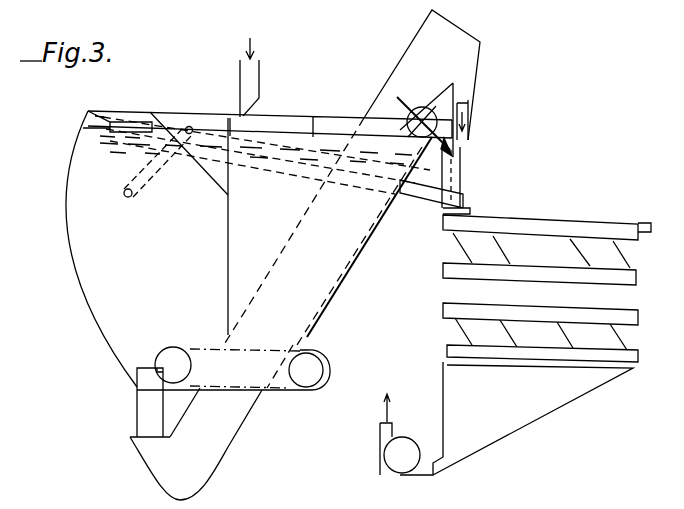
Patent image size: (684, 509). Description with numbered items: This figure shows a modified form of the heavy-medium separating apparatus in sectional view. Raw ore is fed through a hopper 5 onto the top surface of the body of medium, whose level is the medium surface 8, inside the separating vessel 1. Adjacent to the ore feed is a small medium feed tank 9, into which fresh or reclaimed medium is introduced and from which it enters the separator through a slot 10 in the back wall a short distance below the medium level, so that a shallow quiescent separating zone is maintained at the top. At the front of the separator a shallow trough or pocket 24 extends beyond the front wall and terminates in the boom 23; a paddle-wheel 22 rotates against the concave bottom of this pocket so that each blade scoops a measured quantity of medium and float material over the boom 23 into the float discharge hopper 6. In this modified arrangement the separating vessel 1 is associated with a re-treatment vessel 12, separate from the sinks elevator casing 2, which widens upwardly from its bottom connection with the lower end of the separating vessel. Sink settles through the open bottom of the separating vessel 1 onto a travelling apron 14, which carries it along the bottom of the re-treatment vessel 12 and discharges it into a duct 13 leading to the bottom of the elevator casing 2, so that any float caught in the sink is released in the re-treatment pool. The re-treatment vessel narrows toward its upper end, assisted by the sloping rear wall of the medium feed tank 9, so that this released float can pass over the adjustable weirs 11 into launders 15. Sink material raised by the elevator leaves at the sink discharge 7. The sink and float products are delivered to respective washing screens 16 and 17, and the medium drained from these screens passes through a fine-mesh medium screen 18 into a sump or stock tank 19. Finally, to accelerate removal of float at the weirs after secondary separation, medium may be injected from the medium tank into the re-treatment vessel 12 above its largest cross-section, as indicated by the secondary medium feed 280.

The separating vessel 1 is at (362, 252).
The sinks elevator casing 2 is at (405, 52).
The hopper 5 is at (260, 66).
The hopper 6 is at (460, 152).
The sink discharge 7 is at (470, 115).
The medium surface 8 is at (313, 118).
The medium feed tank 9 is at (205, 117).
The slot 10 is at (198, 160).
The weir 11 is at (88, 112).
The re-treatment vessel 12 is at (62, 192).
The duct 13 is at (136, 406).
The travelling apron 14 is at (210, 348).
The launder 15 is at (265, 165).
The washing screen 16 is at (547, 238).
The washing screen 17 is at (590, 222).
The medium screen 18 is at (580, 306).
The sump or stock tank 19 is at (546, 405).
The paddle-wheel 22 is at (408, 110).
The boom 23 is at (430, 106).
The trough or pocket 24 is at (416, 150).
The secondary medium feed 280 is at (128, 198).